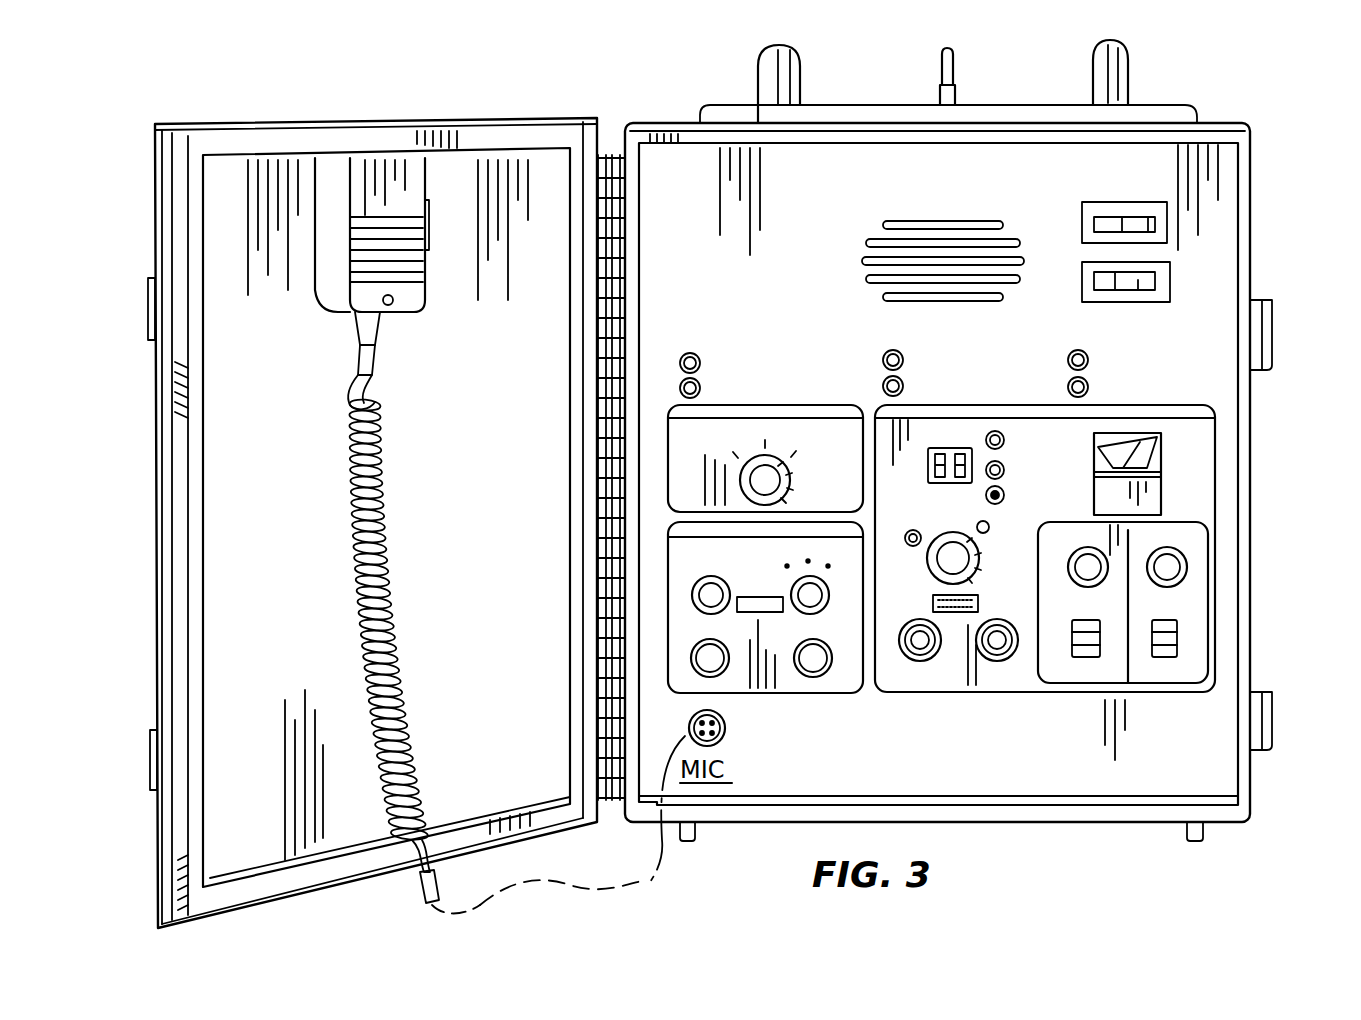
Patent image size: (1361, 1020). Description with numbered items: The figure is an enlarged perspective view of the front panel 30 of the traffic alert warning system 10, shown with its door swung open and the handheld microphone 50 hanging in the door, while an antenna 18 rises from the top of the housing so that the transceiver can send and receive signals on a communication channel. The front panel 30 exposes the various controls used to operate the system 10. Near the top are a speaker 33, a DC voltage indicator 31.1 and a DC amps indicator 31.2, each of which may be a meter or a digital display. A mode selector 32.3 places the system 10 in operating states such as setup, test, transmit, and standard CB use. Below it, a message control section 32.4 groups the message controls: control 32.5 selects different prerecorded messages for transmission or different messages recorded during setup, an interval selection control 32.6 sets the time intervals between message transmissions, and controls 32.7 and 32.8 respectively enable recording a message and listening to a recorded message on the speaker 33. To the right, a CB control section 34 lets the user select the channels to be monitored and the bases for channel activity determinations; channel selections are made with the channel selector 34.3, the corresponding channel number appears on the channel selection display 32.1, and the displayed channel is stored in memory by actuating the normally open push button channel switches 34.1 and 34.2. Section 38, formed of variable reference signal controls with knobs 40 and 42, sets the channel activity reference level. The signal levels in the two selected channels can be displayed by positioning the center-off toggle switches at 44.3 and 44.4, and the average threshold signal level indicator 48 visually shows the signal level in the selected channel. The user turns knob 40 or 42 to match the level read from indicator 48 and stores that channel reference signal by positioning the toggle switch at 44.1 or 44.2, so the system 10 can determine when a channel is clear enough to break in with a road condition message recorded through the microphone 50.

The traffic alert warning system 10 is at (622, 98).
The antenna 18 is at (958, 60).
The front panel 30 is at (865, 185).
The DC voltage indicator 31.1 is at (1082, 226).
The DC amps indicator 31.2 is at (1170, 287).
The channel selection display 32.1 is at (922, 465).
The mode selector 32.3 is at (770, 462).
The message control section 32.4 is at (668, 545).
The message selection control 32.5 is at (700, 598).
The interval selection control 32.6 is at (818, 602).
The record control 32.7 is at (700, 655).
The listen control 32.8 is at (812, 670).
The speaker 33 is at (964, 224).
The CB control section 34 is at (1172, 400).
The push button channel switch 34.1 is at (1004, 440).
The push button channel switch 34.2 is at (1004, 470).
The channel selector 34.3 is at (952, 550).
The channel activity reference level section 38 is at (1210, 538).
The reference signal knob 40 is at (1082, 570).
The reference signal knob 42 is at (1195, 565).
The toggle switch position 44.1 is at (1097, 605).
The toggle switch position 44.2 is at (1180, 625).
The toggle switch 44.3 is at (1082, 652).
The toggle switch 44.4 is at (1177, 652).
The average threshold signal level indicator 48 is at (1150, 472).
The microphone 50 is at (365, 178).